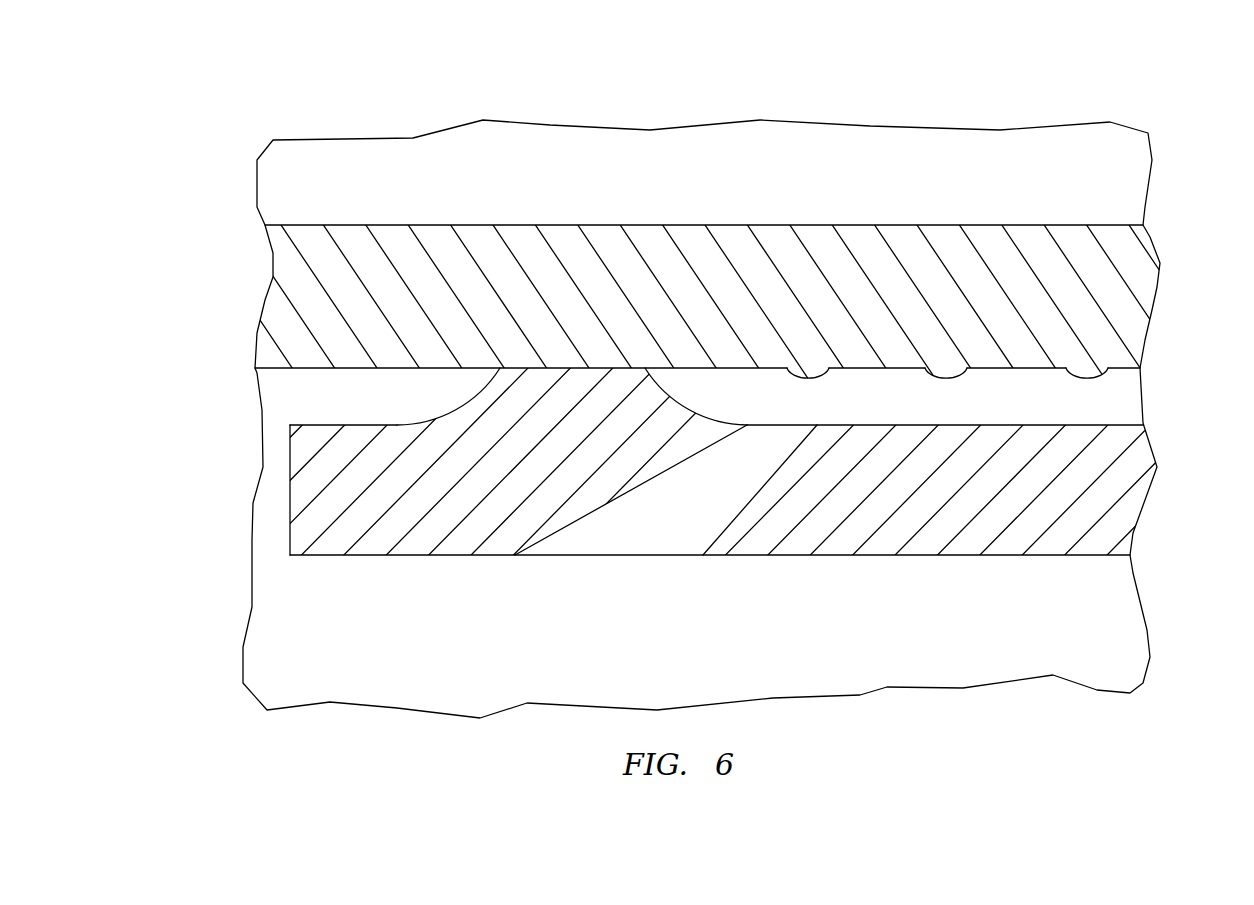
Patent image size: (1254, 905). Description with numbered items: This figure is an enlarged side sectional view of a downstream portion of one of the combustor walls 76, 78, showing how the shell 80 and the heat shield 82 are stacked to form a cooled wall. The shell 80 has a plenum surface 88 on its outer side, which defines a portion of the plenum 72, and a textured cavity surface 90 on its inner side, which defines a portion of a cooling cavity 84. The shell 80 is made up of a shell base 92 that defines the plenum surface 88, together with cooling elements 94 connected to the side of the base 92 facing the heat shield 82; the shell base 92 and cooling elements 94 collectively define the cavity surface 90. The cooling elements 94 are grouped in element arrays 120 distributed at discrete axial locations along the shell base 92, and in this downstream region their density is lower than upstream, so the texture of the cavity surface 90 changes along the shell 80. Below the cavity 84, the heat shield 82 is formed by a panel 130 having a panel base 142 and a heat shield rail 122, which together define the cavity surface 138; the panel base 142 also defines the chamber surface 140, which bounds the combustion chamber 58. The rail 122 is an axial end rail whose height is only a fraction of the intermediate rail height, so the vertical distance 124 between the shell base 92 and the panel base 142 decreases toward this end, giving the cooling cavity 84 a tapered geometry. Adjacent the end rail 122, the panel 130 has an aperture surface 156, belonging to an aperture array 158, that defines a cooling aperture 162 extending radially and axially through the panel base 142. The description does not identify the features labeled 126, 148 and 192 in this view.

The wall 76 is at (740, 395).
The wall 78 is at (1175, 130).
The plenum 72 is at (704, 193).
The shell 80 is at (434, 219).
The shell base 92 is at (748, 248).
The plenum surface 88 is at (1125, 225).
The cavity surface 90 is at (729, 324).
The element array 120 is at (808, 356).
The cooling element 94 is at (813, 381).
The cavity surface 138 is at (1143, 425).
The cooling cavity 84 is at (1100, 428).
The heat shield rail 122 is at (557, 390).
The gap distance 192 is at (397, 380).
The vertical distance 124 is at (904, 380).
The lamination edge 126 is at (209, 490).
The lamination edge 148 is at (288, 502).
The heat shield 82 is at (691, 500).
The panel 130 is at (691, 500).
The combustion chamber 58 is at (412, 672).
The cooling aperture 162 is at (613, 538).
The aperture array 158 is at (624, 585).
The aperture surface 156 is at (722, 533).
The panel base 142 is at (912, 533).
The chamber surface 140 is at (1113, 555).